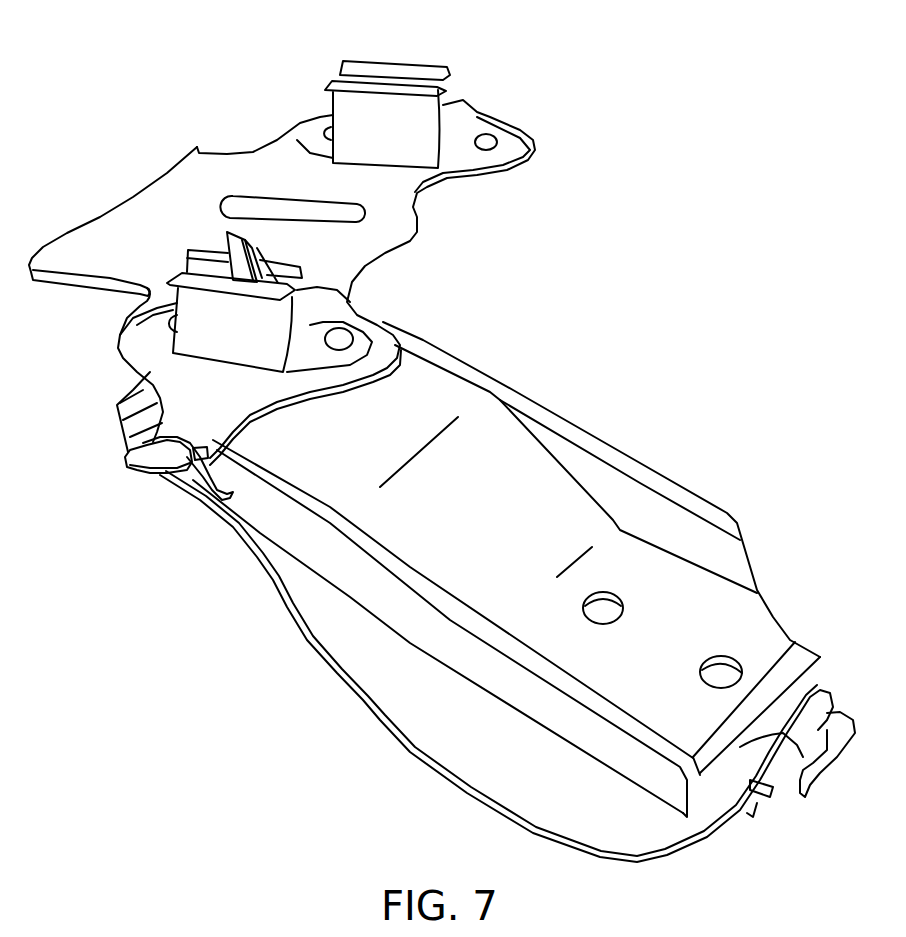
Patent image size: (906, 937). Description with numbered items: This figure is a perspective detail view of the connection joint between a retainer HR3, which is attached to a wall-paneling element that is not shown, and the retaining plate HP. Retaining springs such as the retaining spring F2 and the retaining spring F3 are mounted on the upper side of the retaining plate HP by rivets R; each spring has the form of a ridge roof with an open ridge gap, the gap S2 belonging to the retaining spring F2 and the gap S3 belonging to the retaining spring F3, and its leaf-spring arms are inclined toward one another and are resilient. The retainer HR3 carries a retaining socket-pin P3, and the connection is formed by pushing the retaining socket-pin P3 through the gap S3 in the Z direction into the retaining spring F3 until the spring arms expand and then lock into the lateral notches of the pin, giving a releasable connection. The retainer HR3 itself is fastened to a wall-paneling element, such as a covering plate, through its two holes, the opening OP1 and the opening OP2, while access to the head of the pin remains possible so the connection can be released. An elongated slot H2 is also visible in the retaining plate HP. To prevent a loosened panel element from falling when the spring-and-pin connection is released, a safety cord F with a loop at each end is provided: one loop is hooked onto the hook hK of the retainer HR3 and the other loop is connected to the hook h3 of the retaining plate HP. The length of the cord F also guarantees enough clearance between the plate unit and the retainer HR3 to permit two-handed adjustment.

The retaining plate HP is at (395, 235).
The slot H2 is at (350, 215).
The rivet R is at (350, 338).
The retaining spring F2 is at (453, 113).
The gap S2 is at (355, 68).
The retaining spring F3 is at (208, 343).
The gap S3 is at (273, 265).
The retaining socket-pin P3 is at (238, 253).
The hook h3 is at (145, 468).
The retainer HR3 is at (385, 607).
The opening OP1 is at (615, 603).
The opening OP2 is at (728, 663).
The safety cord F is at (418, 763).
The hook hK is at (813, 793).